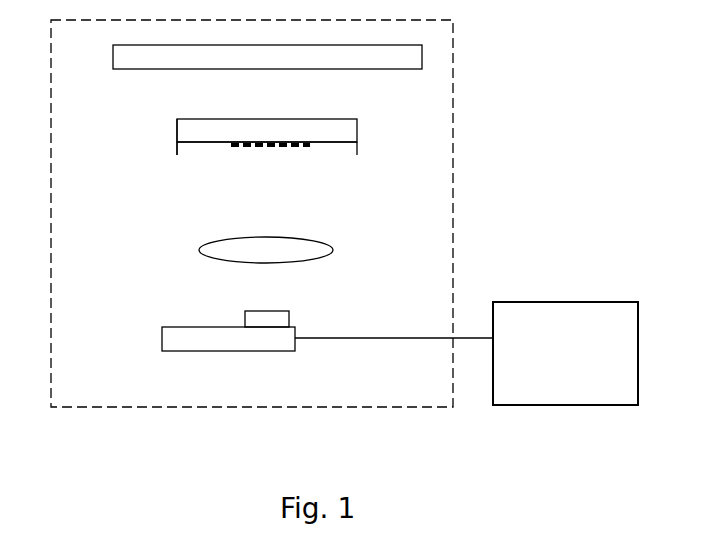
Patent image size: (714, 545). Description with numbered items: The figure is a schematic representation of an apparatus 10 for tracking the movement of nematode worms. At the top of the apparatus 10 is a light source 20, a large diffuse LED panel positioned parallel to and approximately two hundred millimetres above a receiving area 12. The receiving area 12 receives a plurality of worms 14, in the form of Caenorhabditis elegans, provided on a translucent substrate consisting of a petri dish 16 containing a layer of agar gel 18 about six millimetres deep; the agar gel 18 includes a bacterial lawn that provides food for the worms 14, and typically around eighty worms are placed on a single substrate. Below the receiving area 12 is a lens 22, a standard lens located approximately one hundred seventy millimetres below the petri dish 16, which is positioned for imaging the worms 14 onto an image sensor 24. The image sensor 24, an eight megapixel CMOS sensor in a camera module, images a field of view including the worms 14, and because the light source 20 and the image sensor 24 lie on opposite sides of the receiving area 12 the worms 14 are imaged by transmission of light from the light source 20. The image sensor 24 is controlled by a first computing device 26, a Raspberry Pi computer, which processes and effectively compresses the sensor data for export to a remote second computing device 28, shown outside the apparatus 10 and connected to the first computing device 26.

The apparatus 10 is at (252, 213).
The receiving area 12 is at (371, 145).
The worms 14 is at (295, 149).
The petri dish 16 is at (174, 143).
The agar gel 18 is at (204, 134).
The light source 20 is at (122, 70).
The lens 22 is at (197, 252).
The image sensor 24 is at (293, 309).
The first computing device 26 is at (159, 339).
The second computing device 28 is at (565, 353).